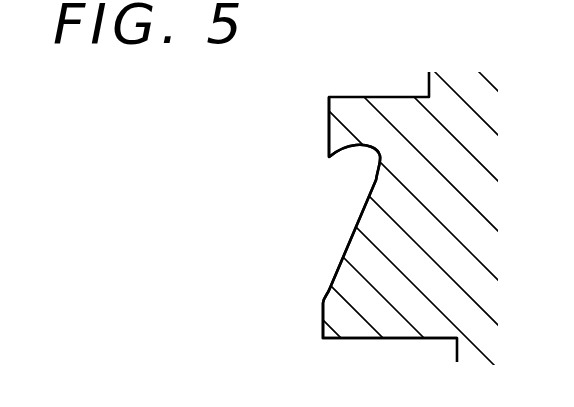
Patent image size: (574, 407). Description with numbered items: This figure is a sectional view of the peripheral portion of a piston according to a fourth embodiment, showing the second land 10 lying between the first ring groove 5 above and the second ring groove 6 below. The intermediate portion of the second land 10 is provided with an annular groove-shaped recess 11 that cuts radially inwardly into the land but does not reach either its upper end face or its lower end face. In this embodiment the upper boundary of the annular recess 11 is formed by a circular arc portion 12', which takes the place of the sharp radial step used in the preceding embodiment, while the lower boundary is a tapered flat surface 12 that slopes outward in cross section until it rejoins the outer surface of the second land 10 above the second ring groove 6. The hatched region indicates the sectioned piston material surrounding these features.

The ring groove 5 is at (367, 82).
The second land 10 is at (328, 128).
The circular arc portion 12' is at (313, 163).
The annular recess 11 is at (350, 196).
The tapered flat surface 12 is at (300, 268).
The second ring groove 6 is at (356, 350).